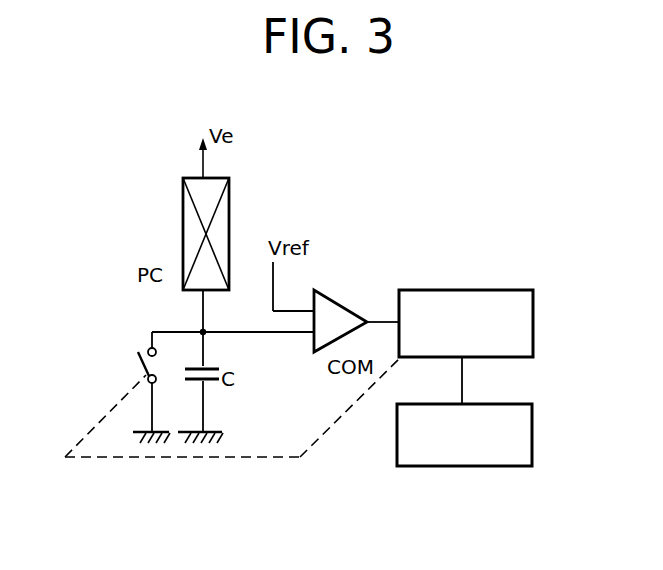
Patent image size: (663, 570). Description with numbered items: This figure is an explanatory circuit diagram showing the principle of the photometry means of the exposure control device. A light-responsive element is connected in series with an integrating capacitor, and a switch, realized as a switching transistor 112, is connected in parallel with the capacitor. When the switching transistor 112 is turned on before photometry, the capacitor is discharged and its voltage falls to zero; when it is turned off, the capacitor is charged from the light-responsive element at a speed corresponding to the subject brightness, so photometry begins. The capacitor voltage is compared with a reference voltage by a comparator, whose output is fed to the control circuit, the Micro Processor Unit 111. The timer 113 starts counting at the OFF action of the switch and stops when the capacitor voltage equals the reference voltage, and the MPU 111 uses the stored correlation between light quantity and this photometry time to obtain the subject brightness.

The Micro Processor Unit (MPU) 111 is at (463, 290).
The switching transistor 112 is at (148, 380).
The timer 113 is at (461, 466).